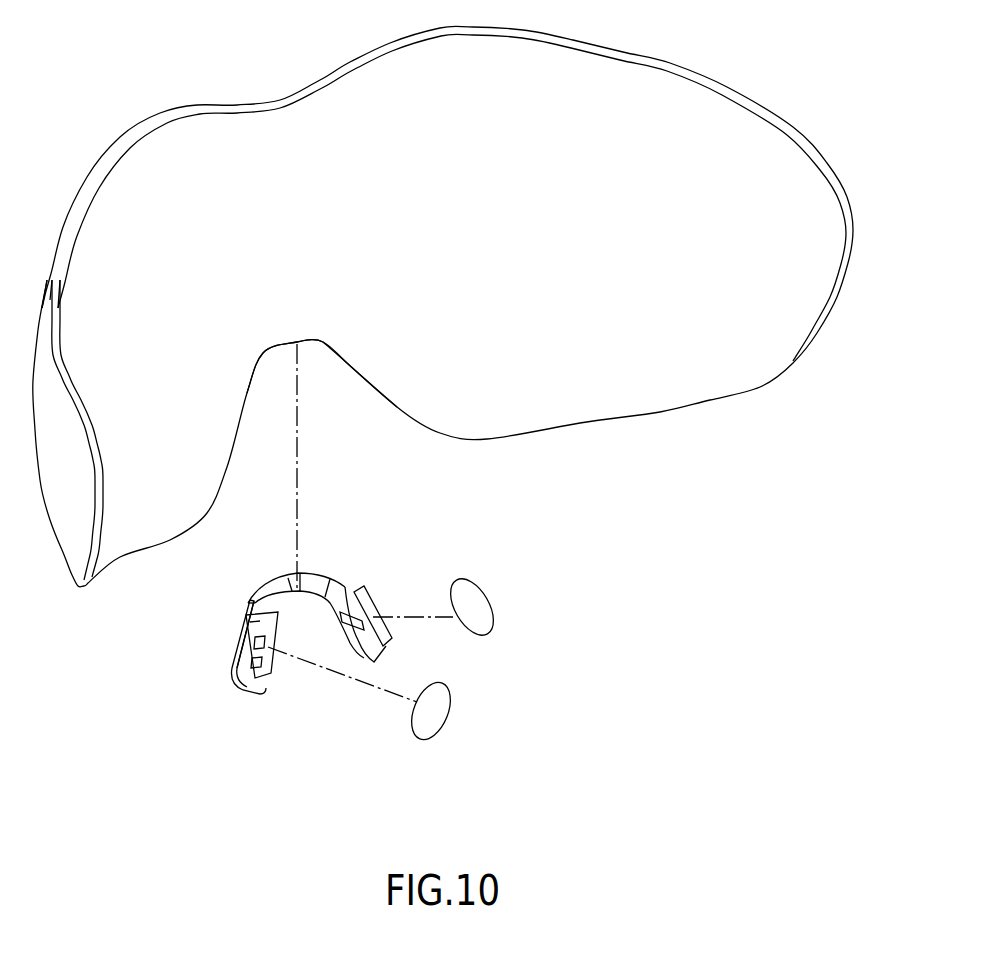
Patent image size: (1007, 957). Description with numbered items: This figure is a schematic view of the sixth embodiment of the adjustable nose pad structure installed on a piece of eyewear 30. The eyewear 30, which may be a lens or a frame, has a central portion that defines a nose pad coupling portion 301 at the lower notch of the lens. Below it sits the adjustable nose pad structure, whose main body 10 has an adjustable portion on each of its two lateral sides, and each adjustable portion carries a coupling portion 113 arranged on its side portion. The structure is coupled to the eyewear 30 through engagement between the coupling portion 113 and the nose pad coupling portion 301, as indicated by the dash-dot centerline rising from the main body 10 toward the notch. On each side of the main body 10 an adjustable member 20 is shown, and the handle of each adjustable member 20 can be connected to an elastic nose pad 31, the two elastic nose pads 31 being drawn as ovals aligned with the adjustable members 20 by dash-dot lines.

The main body 10 is at (277, 592).
The adjustable member 20 is at (366, 604).
The eyewear 30 is at (185, 158).
The elastic nose pad 31 is at (473, 607).
The coupling portion 113 is at (248, 607).
The nose pad coupling portion 301 is at (322, 377).